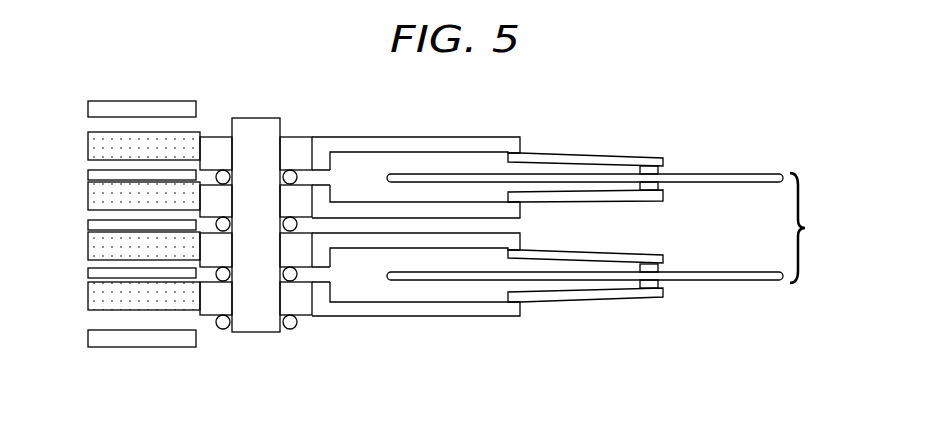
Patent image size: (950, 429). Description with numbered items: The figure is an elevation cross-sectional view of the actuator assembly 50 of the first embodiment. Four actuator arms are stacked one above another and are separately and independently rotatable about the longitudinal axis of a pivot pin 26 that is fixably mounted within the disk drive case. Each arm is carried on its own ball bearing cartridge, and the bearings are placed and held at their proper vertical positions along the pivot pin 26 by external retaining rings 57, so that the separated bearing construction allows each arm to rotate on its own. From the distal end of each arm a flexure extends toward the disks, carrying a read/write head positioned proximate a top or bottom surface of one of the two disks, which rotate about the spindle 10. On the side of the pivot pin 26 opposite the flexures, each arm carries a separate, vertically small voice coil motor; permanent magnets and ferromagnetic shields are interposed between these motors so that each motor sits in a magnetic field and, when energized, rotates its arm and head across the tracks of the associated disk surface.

The pivot pin 26 is at (252, 118).
The external retaining rings 57 is at (284, 171).
The actuator assembly 50 is at (630, 101).
The spindle 10 is at (861, 266).